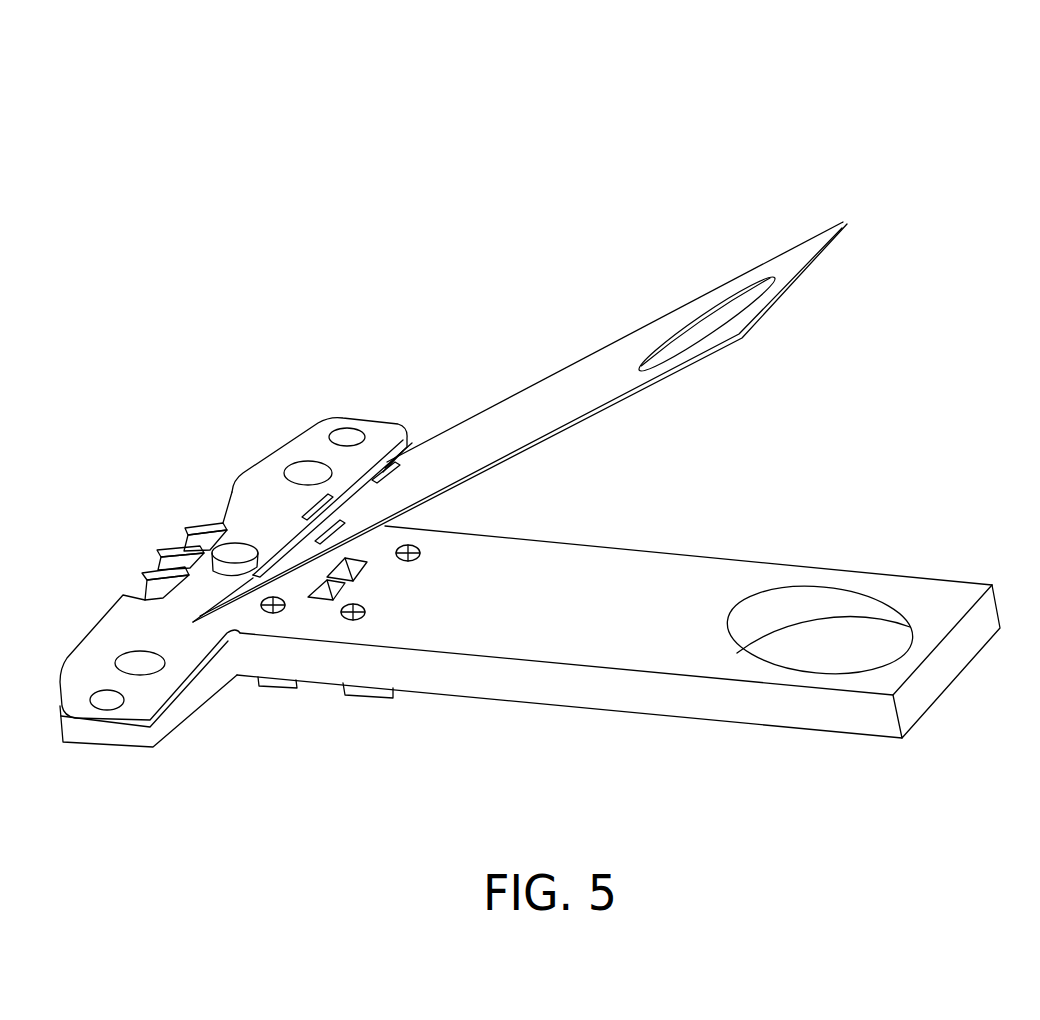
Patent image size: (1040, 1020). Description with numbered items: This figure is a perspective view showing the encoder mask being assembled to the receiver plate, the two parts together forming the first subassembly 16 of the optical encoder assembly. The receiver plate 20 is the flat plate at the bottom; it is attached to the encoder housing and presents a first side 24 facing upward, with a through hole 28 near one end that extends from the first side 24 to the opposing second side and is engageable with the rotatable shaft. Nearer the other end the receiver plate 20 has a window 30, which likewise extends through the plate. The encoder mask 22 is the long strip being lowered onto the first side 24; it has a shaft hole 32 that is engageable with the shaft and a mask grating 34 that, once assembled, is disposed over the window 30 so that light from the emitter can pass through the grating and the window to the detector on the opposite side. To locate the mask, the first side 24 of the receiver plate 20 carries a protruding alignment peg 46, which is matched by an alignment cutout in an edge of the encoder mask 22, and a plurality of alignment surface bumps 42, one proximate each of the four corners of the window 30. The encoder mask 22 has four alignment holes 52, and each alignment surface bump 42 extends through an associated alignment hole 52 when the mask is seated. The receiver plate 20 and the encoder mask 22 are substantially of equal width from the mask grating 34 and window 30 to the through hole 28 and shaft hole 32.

The first subassembly 16 is at (540, 172).
The receiver plate 20 is at (598, 557).
The encoder mask 22 is at (585, 368).
The first side 24 is at (503, 542).
The through hole 28 is at (827, 637).
The window 30 is at (367, 564).
The shaft hole 32 is at (710, 323).
The mask grating 34 is at (302, 513).
The alignment surface bumps 42 is at (366, 613).
The alignment peg 46 is at (232, 550).
The alignment holes 52 is at (382, 470).